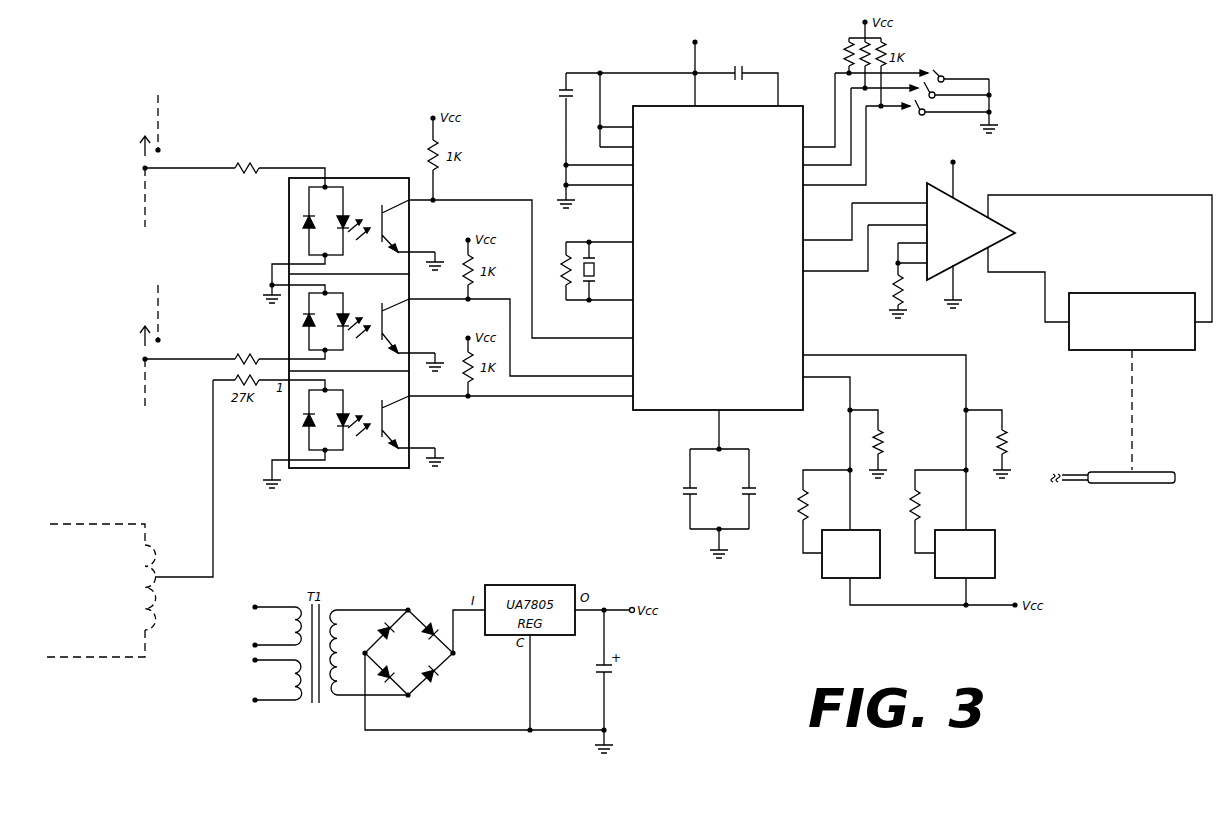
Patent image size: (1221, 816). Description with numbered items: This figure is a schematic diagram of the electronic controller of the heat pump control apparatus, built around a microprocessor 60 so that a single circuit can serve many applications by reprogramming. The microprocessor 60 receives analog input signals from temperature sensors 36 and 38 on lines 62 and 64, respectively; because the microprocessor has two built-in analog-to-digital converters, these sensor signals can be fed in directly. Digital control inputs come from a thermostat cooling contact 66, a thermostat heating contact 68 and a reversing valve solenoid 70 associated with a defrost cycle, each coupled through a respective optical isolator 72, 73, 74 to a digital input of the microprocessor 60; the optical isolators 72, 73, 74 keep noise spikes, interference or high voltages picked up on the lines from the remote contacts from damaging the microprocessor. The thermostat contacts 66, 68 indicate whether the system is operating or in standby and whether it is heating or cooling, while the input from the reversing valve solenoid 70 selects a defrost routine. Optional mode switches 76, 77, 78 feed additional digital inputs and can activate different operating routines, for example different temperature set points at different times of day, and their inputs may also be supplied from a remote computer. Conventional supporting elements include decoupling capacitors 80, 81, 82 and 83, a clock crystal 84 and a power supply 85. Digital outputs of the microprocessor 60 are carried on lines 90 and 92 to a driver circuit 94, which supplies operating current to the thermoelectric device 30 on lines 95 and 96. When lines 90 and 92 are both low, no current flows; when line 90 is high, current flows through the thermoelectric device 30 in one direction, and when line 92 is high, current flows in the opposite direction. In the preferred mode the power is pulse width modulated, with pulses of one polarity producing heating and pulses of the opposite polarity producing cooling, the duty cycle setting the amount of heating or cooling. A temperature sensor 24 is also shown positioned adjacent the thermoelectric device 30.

The temperature sensor 24 is at (1148, 471).
The thermoelectric device 30 is at (1118, 293).
The temperature sensor 36 is at (881, 570).
The temperature sensor 38 is at (996, 570).
The microprocessor 60 is at (804, 322).
The line 62 is at (850, 390).
The line 64 is at (966, 376).
The thermostat cooling contact 66 is at (160, 154).
The thermostat heating contact 68 is at (150, 353).
The reversing valve solenoid 70 is at (152, 600).
The optical isolator 72 is at (289, 221).
The optical isolator 73 is at (289, 320).
The optical isolator 74 is at (289, 420).
The mode switch 76 is at (945, 72).
The mode switch 77 is at (896, 108).
The mode switch 78 is at (912, 118).
The decoupling capacitor 80 is at (748, 72).
The decoupling capacitor 81 is at (562, 85).
The decoupling capacitor 82 is at (683, 478).
The decoupling capacitor 83 is at (765, 480).
The clock crystal 84 is at (588, 241).
The power supply 85 is at (457, 593).
The line 90 is at (901, 202).
The line 92 is at (845, 273).
The driver circuit 94 is at (964, 205).
The line 95 is at (1045, 272).
The line 96 is at (1212, 242).